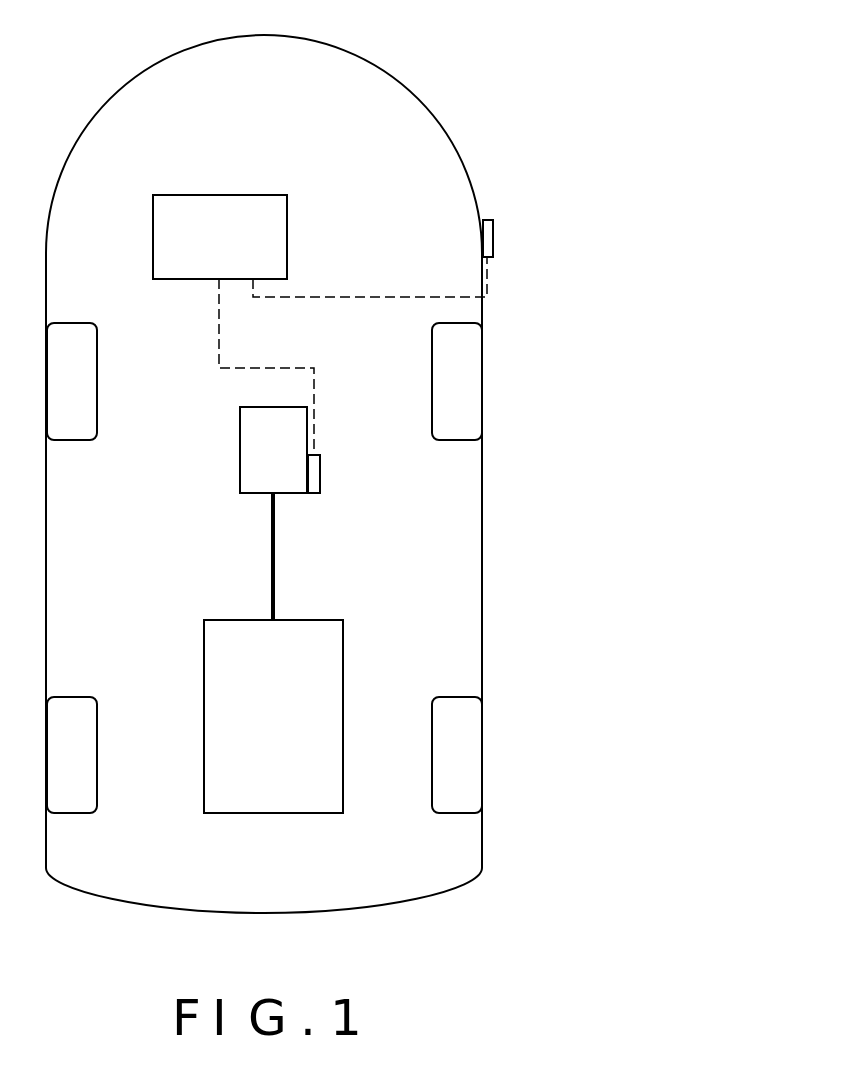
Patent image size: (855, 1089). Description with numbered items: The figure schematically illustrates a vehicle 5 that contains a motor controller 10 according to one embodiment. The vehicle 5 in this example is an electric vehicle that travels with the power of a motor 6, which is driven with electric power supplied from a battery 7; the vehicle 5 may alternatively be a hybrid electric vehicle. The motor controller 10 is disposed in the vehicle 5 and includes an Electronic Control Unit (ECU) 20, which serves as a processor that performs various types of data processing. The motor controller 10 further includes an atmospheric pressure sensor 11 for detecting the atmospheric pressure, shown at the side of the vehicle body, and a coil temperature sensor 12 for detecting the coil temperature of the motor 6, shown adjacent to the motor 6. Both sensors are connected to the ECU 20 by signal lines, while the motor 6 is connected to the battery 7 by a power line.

The vehicle 5 is at (468, 108).
The motor controller 10 is at (262, 167).
The Electronic Control Unit (ECU) 20 is at (287, 230).
The atmospheric pressure sensor 11 is at (493, 233).
The motor 6 is at (240, 447).
The coil temperature sensor 12 is at (320, 474).
The battery 7 is at (343, 715).